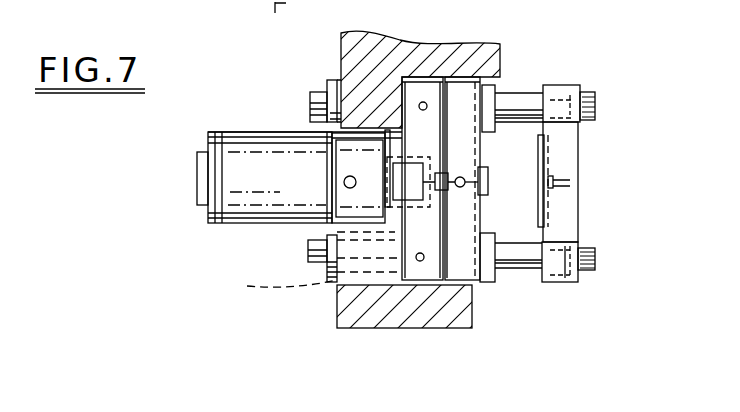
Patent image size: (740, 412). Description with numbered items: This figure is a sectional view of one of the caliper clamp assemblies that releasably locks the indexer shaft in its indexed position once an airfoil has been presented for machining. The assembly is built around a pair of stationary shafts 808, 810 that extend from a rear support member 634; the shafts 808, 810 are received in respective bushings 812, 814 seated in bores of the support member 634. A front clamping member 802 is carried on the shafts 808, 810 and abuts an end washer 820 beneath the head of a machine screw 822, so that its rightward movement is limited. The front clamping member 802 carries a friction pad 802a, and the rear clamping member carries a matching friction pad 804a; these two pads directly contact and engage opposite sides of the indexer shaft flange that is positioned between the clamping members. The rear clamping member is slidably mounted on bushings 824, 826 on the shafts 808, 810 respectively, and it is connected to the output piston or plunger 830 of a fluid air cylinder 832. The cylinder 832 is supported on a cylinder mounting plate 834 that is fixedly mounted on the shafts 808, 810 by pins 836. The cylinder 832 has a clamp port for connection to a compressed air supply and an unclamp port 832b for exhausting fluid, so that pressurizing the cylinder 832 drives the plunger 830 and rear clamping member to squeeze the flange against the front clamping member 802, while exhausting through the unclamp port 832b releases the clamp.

The rear support member 634 is at (345, 53).
The cylinder mounting plate 834 is at (411, 98).
The pins 836 is at (424, 102).
The bushing 824 is at (522, 102).
The stationary shaft 808 is at (310, 97).
The end washer 820 is at (585, 92).
The machine screw 822 is at (597, 112).
The front clamping member 802 is at (568, 200).
The friction pad 802a is at (542, 176).
The friction pad 804a is at (517, 181).
The bushing 826 is at (486, 282).
The stationary shaft 810 is at (308, 245).
The bushing 814 is at (335, 273).
The bushing 812 is at (327, 126).
The fluid air cylinder 832 is at (208, 208).
The unclamp port 832b is at (344, 178).
The output piston or plunger 830 is at (460, 188).